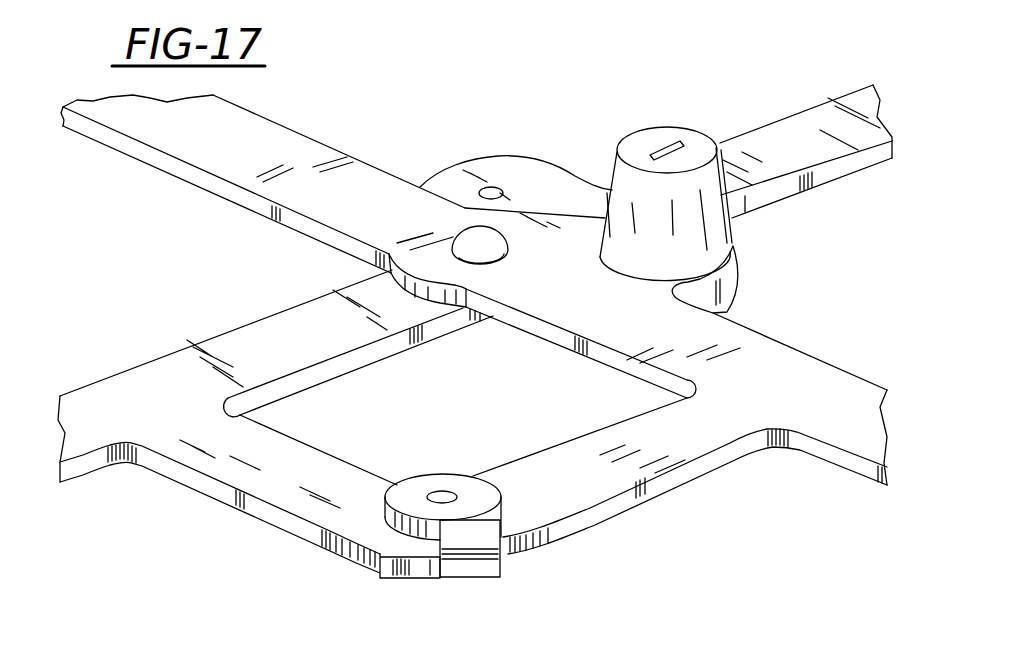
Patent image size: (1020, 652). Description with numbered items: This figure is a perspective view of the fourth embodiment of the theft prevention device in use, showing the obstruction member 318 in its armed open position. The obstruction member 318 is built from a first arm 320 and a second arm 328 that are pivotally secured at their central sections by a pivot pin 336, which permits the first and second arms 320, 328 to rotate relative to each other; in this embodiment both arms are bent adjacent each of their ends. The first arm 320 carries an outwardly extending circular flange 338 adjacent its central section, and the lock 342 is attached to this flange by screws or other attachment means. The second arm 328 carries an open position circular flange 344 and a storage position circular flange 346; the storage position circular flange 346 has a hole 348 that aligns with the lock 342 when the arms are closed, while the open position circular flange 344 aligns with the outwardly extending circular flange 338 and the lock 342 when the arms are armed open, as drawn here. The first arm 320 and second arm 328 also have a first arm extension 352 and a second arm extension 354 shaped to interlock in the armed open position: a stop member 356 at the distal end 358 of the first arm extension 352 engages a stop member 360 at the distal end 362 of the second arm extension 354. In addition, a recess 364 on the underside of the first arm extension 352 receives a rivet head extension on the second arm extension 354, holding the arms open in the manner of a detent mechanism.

The obstruction member 318 is at (618, 113).
The first arm 320 is at (223, 160).
The second arm 328 is at (235, 347).
The pivot pin 336 is at (475, 232).
The outwardly extending circular flange 338 is at (740, 260).
The lock 342 is at (718, 200).
The open position circular flange 344 is at (723, 311).
The storage position circular flange 346 is at (468, 165).
The hole 348 is at (495, 191).
The first arm extension 352 is at (650, 467).
The second arm extension 354 is at (243, 475).
The stop member 356 is at (490, 577).
The distal end 358 is at (472, 473).
The stop member 360 is at (398, 576).
The distal end 362 is at (397, 485).
The recess 364 is at (440, 493).